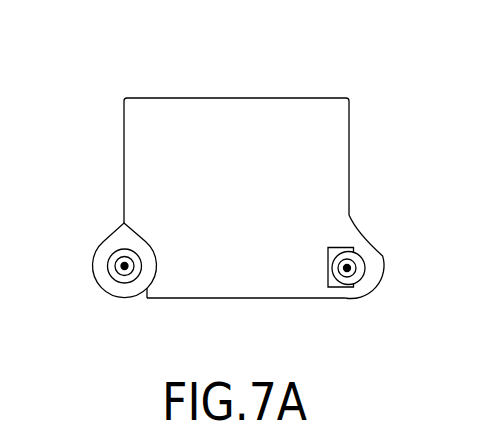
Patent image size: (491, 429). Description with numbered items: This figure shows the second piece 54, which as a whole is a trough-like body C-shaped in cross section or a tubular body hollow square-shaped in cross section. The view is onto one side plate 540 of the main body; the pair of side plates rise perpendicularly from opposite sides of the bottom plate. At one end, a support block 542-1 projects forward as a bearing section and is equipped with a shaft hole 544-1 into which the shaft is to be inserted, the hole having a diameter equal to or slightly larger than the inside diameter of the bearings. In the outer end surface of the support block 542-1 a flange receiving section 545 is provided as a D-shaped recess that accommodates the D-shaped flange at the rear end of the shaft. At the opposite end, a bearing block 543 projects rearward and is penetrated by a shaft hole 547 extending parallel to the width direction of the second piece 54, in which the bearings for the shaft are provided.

The second piece 54 is at (270, 83).
The side plate 540 is at (217, 98).
The bearing block 543 is at (112, 235).
The shaft hole 547 is at (121, 267).
The support block 542-1 is at (371, 246).
The shaft hole 544-1 is at (348, 268).
The flange receiving section 545 is at (339, 287).